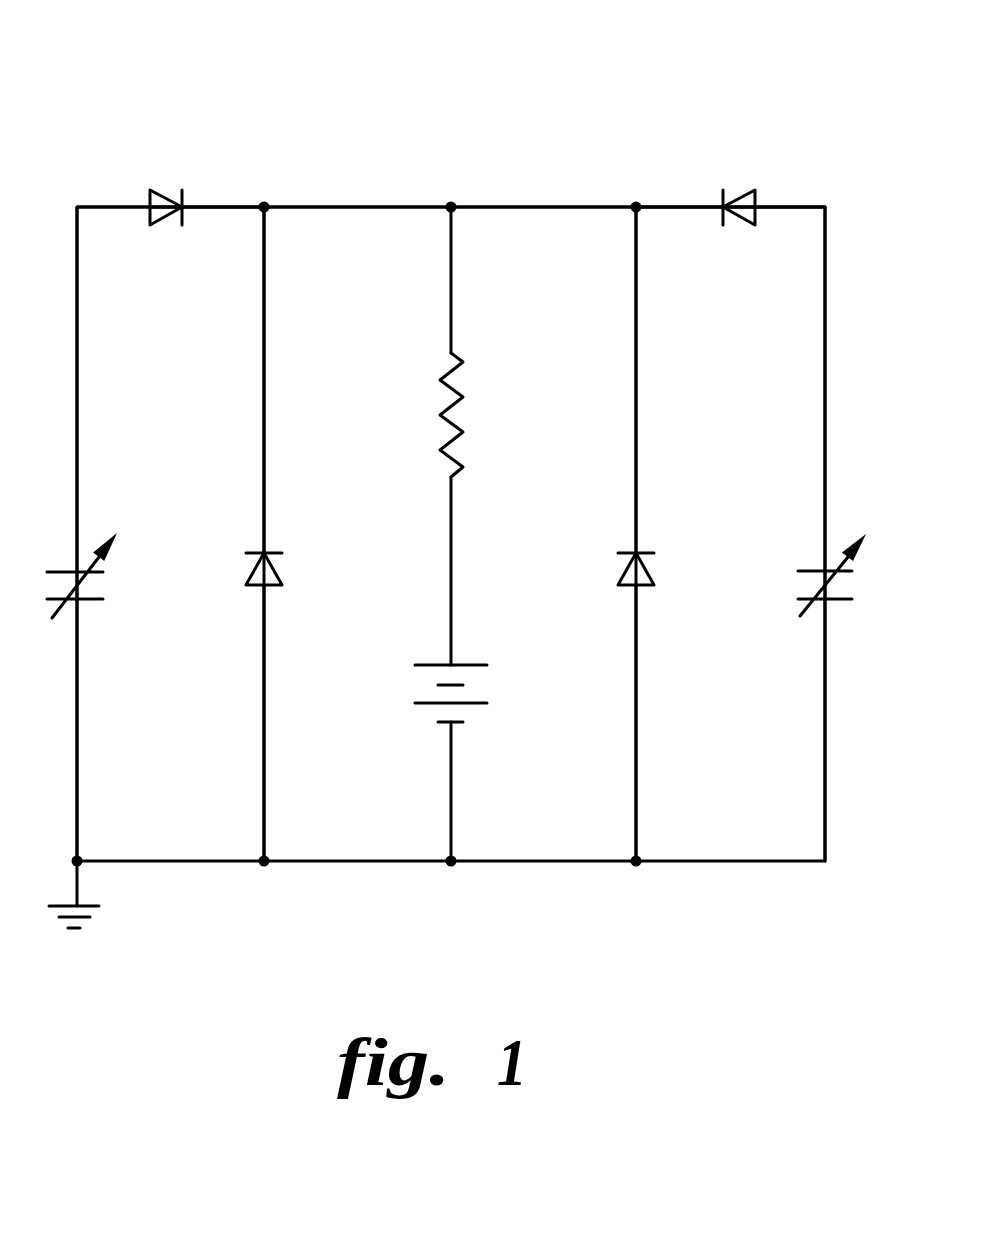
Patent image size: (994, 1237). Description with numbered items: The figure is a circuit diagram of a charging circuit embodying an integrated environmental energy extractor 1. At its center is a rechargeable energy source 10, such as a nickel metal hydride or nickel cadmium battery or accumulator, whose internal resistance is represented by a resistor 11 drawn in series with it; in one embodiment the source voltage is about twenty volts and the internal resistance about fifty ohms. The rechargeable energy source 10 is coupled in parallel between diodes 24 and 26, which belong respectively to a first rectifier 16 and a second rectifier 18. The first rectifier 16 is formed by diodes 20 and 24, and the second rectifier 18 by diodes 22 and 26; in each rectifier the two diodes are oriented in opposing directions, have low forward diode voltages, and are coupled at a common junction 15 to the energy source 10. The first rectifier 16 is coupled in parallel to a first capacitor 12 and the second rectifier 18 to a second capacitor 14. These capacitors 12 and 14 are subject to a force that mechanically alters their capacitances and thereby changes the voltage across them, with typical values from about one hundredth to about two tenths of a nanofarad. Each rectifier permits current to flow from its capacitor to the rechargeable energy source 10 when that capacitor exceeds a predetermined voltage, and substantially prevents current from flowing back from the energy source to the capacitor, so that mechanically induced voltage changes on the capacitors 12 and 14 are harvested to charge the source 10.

The integrated environmental energy extractor 1 is at (618, 115).
The rechargeable energy source 10 is at (467, 663).
The resistor 11 is at (455, 424).
The first capacitor 12 is at (92, 599).
The second capacitor 14 is at (843, 600).
The common junction 15 is at (452, 206).
The first rectifier 16 is at (231, 516).
The second rectifier 18 is at (661, 516).
The first diode of first rectifier 20 is at (152, 204).
The first diode of second rectifier 22 is at (758, 205).
The second diode of first rectifier 24 is at (282, 578).
The second diode of second rectifier 26 is at (654, 578).